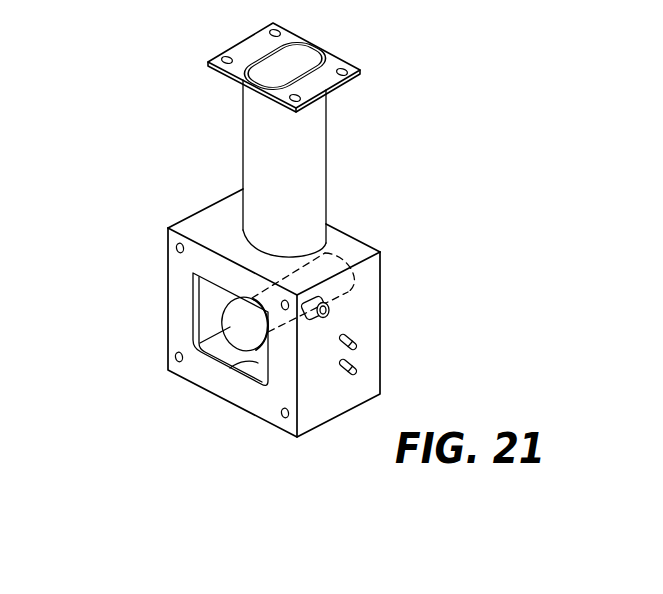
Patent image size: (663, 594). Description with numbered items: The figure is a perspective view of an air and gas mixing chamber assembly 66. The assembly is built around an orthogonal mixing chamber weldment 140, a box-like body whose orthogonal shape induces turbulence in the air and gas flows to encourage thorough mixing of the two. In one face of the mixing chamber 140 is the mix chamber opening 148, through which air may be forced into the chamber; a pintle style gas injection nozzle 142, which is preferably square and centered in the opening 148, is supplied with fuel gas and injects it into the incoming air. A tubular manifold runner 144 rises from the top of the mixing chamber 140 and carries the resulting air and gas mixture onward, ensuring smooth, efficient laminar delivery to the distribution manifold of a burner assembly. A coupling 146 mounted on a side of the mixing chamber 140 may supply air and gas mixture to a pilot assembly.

The air and gas mixing chamber assembly 66 is at (158, 141).
The orthogonal mixing chamber weldment 140 is at (368, 333).
The pintle style gas injection nozzle 142 is at (235, 318).
The tubular manifold runner 144 is at (300, 163).
The coupling 146 is at (333, 313).
The mix chamber opening 148 is at (230, 368).